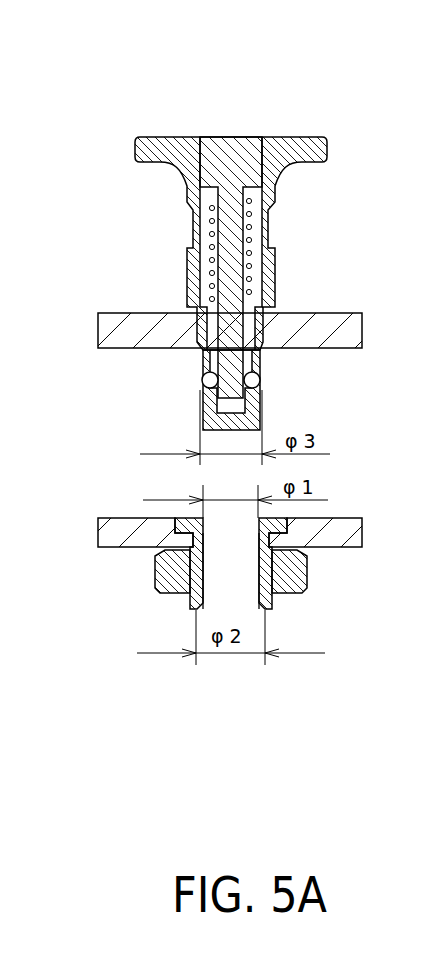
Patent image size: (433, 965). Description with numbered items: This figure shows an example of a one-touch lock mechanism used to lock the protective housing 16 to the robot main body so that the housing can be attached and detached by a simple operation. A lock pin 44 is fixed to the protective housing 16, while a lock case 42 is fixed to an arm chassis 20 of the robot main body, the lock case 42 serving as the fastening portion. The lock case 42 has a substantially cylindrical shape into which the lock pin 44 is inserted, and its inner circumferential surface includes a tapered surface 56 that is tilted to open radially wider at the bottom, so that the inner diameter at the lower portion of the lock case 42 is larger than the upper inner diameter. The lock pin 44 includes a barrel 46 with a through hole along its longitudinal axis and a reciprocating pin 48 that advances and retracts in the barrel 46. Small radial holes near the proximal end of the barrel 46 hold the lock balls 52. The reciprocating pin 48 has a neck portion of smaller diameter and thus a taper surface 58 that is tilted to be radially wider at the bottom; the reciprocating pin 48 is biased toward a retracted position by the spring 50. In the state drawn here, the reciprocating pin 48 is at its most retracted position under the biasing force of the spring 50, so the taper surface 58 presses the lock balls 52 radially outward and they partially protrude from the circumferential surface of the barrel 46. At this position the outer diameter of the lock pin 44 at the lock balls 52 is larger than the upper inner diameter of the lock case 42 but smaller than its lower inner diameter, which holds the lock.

The lock pin 44 is at (232, 220).
The barrel 46 is at (190, 194).
The reciprocating pin 48 is at (230, 137).
The spring 50 is at (272, 198).
The lock balls 52 is at (203, 380).
The taper surface 58 is at (256, 375).
The protective housing 16 is at (337, 313).
The arm chassis 20 is at (338, 518).
The lock case 42 is at (138, 588).
The tapered surface 56 is at (203, 548).